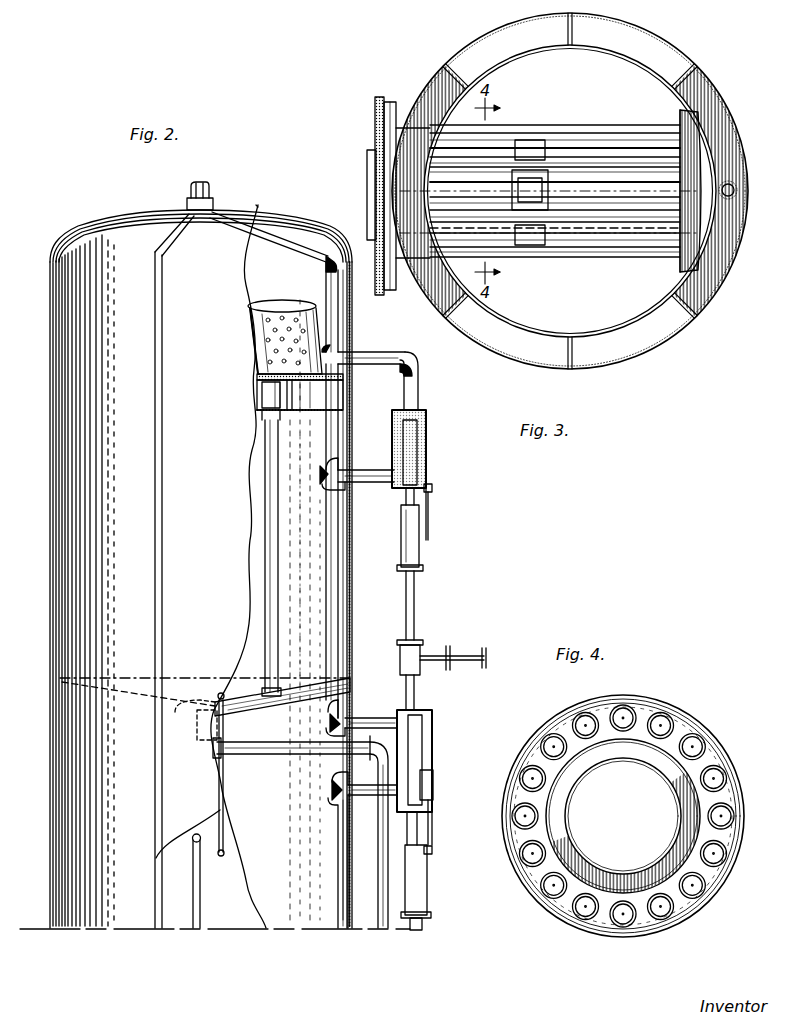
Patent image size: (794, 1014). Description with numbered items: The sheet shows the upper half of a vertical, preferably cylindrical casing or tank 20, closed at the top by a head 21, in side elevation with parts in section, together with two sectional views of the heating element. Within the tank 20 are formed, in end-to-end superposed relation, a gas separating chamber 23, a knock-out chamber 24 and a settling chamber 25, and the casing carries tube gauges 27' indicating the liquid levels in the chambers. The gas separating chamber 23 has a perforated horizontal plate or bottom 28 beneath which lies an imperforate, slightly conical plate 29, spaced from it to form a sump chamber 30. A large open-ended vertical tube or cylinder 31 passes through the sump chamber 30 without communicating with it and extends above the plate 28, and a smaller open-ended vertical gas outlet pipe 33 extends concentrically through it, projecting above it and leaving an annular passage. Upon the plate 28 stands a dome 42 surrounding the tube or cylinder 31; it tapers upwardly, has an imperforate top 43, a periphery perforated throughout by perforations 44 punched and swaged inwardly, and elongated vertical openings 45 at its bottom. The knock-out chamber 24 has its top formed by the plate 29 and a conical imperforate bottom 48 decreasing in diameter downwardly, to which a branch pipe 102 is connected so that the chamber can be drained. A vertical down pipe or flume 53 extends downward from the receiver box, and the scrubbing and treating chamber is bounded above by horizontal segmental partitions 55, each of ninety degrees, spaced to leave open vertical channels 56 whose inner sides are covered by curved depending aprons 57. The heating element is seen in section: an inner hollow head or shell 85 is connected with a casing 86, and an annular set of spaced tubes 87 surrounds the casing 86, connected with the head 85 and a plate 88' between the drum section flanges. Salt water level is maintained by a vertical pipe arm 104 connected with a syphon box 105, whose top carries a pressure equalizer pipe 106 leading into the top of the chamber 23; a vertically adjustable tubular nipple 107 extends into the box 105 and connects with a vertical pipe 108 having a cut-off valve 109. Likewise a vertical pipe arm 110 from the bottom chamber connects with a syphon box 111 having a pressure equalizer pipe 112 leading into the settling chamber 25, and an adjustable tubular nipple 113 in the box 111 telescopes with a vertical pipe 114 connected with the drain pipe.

In FIG. 2, the vertical casing or tank 20 is at (78, 555).
In FIG. 2, the head 21 is at (255, 222).
In FIG. 2, the gas separating chamber 23 is at (262, 270).
In FIG. 2, the knock-out chamber 24 is at (298, 530).
In FIG. 2, the settling chamber 25 is at (238, 728).
In FIG. 2, the tube gauge 27' is at (169, 869).
In FIG. 2, the horizontal plate or bottom 28 is at (300, 395).
In FIG. 2, the plate or bottom 29 is at (322, 412).
In FIG. 2, the sump chamber 30 is at (350, 388).
In FIG. 2, the tube or cylinder 31 is at (268, 398).
In FIG. 2, the vertical gas outlet pipe 33 is at (278, 470).
In FIG. 2, the dome 42 is at (255, 356).
In FIG. 2, the imperforate top 43 is at (273, 258).
In FIG. 2, the perforations 44 is at (254, 322).
In FIG. 2, the elongated vertical openings 45 is at (262, 378).
In FIG. 2, the imperforate bottom 48 is at (250, 700).
In FIG. 3, the vertical down pipe or flume 53 is at (738, 194).
In FIG. 3, the horizontal segmental partition 55 is at (432, 84).
In FIG. 3, the open vertical channel or passage 56 is at (652, 48).
In FIG. 3, the depending apron 57 is at (604, 52).
In FIG. 3, the inner hollow head or shell 85 is at (698, 172).
In FIG. 4, the inner hollow head or shell 85 is at (702, 898).
In FIG. 4, the casing 86 is at (674, 832).
In FIG. 3, the tubes 87 is at (574, 140).
In FIG. 4, the tubes 87 is at (584, 922).
In FIG. 3, the plate 88' is at (383, 196).
In FIG. 2, the branch pipe 102 is at (426, 896).
In FIG. 2, the vertical pipe arm 104 is at (333, 603).
In FIG. 2, the syphon box 105 is at (426, 452).
In FIG. 2, the pressure equalizer pipe 106 is at (340, 328).
In FIG. 2, the vertically adjustable tubular nipple 107 is at (417, 470).
In FIG. 2, the vertical pipe 108 is at (416, 588).
In FIG. 2, the cut-off valve 109 is at (418, 666).
In FIG. 2, the vertical pipe arm 110 is at (336, 880).
In FIG. 2, the syphon box 111 is at (432, 750).
In FIG. 2, the pressure equalizer pipe 112 is at (348, 702).
In FIG. 2, the vertically adjustable tubular nipple 113 is at (434, 776).
In FIG. 2, the vertical pipe 114 is at (424, 920).